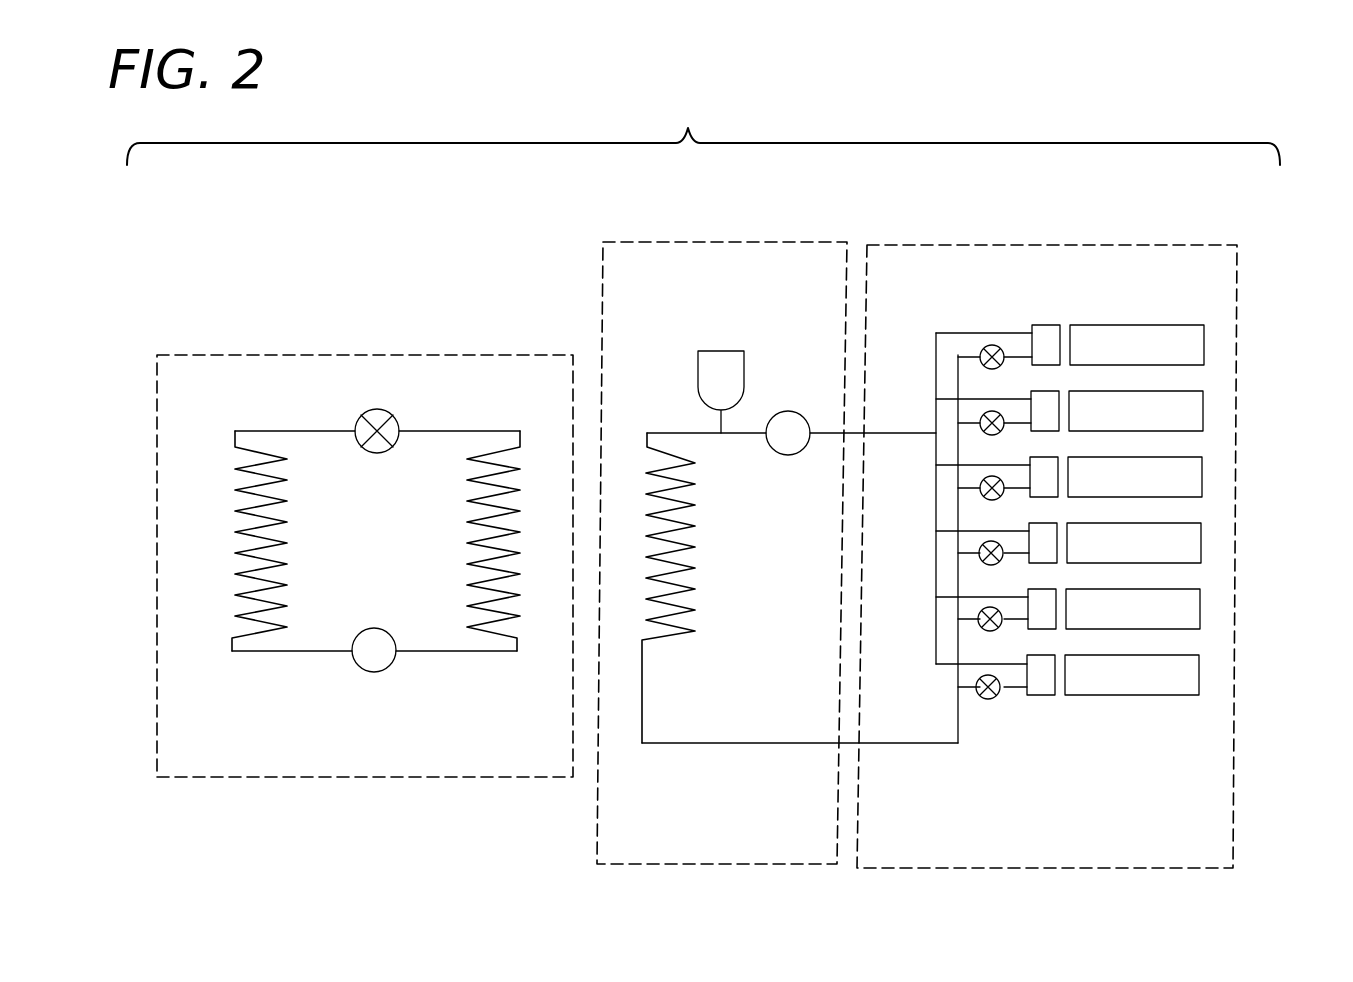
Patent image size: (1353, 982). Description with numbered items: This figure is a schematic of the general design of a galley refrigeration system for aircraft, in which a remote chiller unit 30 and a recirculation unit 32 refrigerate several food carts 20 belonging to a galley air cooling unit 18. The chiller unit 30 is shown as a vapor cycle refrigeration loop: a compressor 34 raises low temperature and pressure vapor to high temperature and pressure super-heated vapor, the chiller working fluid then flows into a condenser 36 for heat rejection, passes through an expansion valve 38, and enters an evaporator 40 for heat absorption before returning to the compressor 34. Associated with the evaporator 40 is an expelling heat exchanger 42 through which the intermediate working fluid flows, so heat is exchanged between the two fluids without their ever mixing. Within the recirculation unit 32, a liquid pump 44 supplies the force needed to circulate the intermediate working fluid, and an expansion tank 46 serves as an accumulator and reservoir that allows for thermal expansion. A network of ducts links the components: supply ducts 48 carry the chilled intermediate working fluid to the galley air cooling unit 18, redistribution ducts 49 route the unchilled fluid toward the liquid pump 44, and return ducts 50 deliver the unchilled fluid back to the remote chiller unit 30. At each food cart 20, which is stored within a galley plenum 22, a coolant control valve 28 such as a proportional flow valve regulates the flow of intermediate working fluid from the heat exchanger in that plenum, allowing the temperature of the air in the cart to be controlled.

The galley air cooling unit 18 is at (1218, 482).
The food cart 20 is at (1125, 708).
The galley plenum 22 is at (1045, 697).
The coolant control valve 28 is at (990, 700).
The remote chiller unit 30 is at (377, 355).
The recirculation unit 32 is at (727, 242).
The compressor 34 is at (392, 661).
The condenser 36 is at (242, 550).
The expansion valve 38 is at (394, 417).
The evaporator 40 is at (467, 524).
The expelling heat exchanger 42 is at (684, 526).
The liquid pump 44 is at (793, 411).
The expansion tank 46 is at (725, 350).
The supply duct 48 is at (705, 747).
The redistribution duct 49 is at (933, 415).
The return duct 50 is at (668, 432).